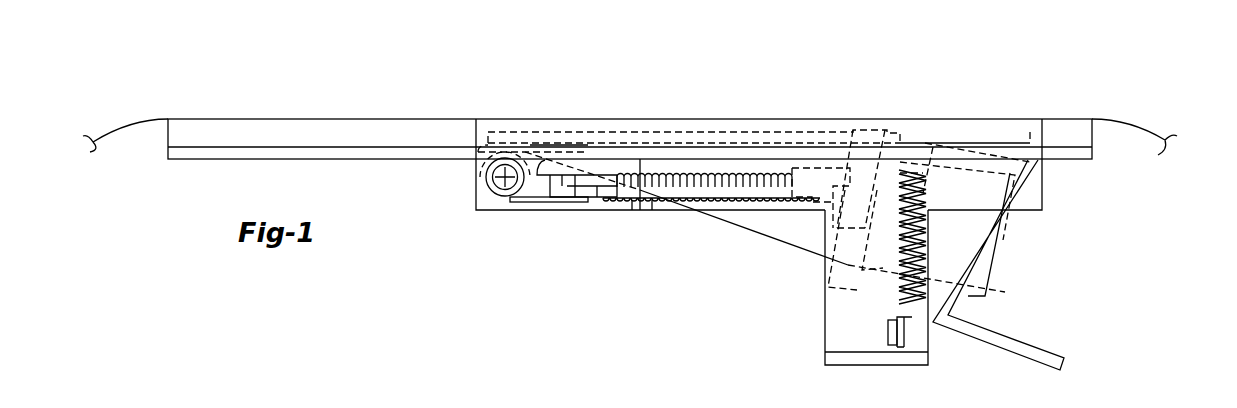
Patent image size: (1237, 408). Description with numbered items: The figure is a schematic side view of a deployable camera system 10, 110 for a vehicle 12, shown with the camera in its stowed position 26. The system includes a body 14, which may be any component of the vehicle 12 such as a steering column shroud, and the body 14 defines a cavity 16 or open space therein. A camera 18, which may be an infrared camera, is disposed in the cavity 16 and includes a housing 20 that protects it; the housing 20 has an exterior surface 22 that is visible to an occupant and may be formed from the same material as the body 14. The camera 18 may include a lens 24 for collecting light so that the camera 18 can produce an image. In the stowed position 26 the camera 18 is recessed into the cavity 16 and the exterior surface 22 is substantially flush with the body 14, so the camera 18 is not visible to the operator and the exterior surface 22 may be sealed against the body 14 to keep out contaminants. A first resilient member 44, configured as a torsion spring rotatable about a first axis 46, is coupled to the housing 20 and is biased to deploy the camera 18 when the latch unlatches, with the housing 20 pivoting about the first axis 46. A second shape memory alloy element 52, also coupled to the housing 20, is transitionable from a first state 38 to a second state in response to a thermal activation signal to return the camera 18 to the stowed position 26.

The deployable camera system 10 is at (1161, 109).
The deployable camera system 110 is at (1139, 110).
The vehicle 12 is at (130, 123).
The body 14 is at (262, 134).
The cavity 16 is at (598, 275).
The camera 18 is at (958, 233).
The housing 20 is at (791, 232).
The exterior surface 22 is at (712, 108).
The lens 24 is at (995, 265).
The stowed position 26 is at (1088, 314).
The first state 38 is at (935, 276).
The second shape memory alloy element 52 is at (907, 320).
The first resilient member 44 is at (546, 145).
The first axis 46 is at (504, 177).